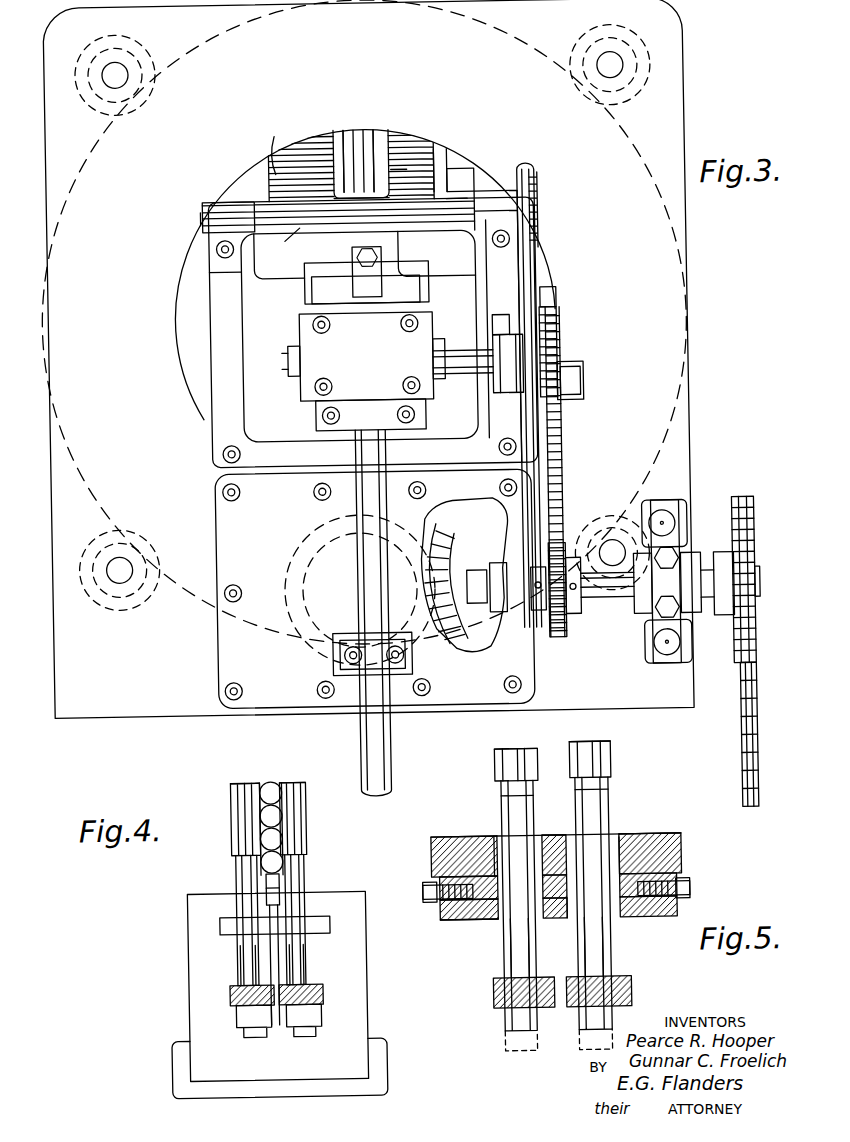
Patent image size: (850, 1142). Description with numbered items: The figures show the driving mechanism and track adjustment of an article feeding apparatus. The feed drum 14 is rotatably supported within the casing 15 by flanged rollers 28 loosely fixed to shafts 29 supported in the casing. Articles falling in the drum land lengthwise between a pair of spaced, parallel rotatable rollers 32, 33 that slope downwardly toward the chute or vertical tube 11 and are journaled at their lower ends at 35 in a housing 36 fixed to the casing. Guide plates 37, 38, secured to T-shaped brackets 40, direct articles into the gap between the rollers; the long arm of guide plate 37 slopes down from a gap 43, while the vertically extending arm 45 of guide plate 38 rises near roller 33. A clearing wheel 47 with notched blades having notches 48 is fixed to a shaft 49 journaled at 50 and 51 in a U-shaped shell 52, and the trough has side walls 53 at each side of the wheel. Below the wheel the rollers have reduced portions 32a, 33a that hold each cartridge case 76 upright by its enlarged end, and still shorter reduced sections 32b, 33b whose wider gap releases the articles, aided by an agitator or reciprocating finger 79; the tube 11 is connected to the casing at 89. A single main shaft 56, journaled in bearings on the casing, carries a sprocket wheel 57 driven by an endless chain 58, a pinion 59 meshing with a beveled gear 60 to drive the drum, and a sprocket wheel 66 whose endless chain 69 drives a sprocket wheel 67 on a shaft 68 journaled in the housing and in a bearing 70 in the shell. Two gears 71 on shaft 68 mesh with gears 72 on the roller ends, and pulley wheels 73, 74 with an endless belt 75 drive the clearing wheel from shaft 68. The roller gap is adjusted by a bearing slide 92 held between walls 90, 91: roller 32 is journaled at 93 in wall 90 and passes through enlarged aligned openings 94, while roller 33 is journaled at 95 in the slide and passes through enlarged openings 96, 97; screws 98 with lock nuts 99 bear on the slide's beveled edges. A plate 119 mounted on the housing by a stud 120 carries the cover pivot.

In FIG. 3, the chute or vertical tube 11 is at (370, 567).
In FIG. 3, the feed drum 14 is at (90, 480).
In FIG. 3, the casing 15 is at (675, 473).
In FIG. 3, the rollers 28 is at (136, 48).
In FIG. 3, the shafts 29 is at (121, 71).
In FIG. 3, the roller 32 is at (352, 130).
In FIG. 4, the roller 32 is at (243, 780).
In FIG. 5, the roller 32 is at (517, 740).
In FIG. 4, the reduced portion of roller 32a is at (242, 840).
In FIG. 5, the reduced portion of roller 32a is at (500, 757).
In FIG. 4, the reduced section of roller 32b is at (240, 870).
In FIG. 5, the reduced section of roller 32b is at (503, 787).
In FIG. 3, the roller 33 is at (385, 132).
In FIG. 4, the roller 33 is at (307, 780).
In FIG. 5, the roller 33 is at (595, 740).
In FIG. 4, the reduced portion of roller 33a is at (310, 825).
In FIG. 5, the reduced portion of roller 33a is at (613, 748).
In FIG. 4, the reduced section of roller 33b is at (313, 863).
In FIG. 5, the reduced section of roller 33b is at (607, 787).
In FIG. 4, the journal 35 is at (217, 927).
In FIG. 3, the housing 36 is at (372, 453).
In FIG. 4, the housing 36 is at (377, 1023).
In FIG. 3, the guide plate 37 is at (302, 165).
In FIG. 3, the guide plate 38 is at (377, 195).
In FIG. 3, the brackets 40 is at (449, 200).
In FIG. 3, the gap 43 is at (268, 144).
In FIG. 3, the vertically extending arm 45 is at (436, 170).
In FIG. 3, the clearing wheel 47 is at (394, 170).
In FIG. 3, the notches 48 is at (365, 143).
In FIG. 3, the shaft 49 is at (463, 207).
In FIG. 3, the journal 50 is at (234, 200).
In FIG. 3, the journal 51 is at (497, 203).
In FIG. 3, the U-shaped shell 52 is at (242, 277).
In FIG. 3, the side walls 53 is at (283, 257).
In FIG. 3, the main shaft 56 is at (603, 590).
In FIG. 3, the sprocket wheel 57 is at (750, 537).
In FIG. 3, the endless chain 58 is at (635, 613).
In FIG. 3, the pinion 59 is at (457, 577).
In FIG. 3, the beveled gear 60 is at (383, 572).
In FIG. 3, the sprocket wheel 66 is at (567, 547).
In FIG. 3, the sprocket wheel 67 is at (558, 330).
In FIG. 3, the shaft 68 is at (473, 365).
In FIG. 3, the endless chain 69 is at (292, 377).
In FIG. 3, the bearing 70 is at (503, 317).
In FIG. 4, the gears 71 is at (248, 952).
In FIG. 5, the gears 71 is at (512, 930).
In FIG. 4, the gears 72 is at (232, 995).
In FIG. 5, the gears 72 is at (490, 990).
In FIG. 3, the pulley wheel 73 is at (557, 300).
In FIG. 3, the pulley wheel 74 is at (541, 180).
In FIG. 3, the endless belt 75 is at (532, 275).
In FIG. 4, the cartridge case 76 is at (272, 792).
In FIG. 4, the agitator or reciprocating finger 79 is at (277, 887).
In FIG. 3, the connection 89 is at (335, 648).
In FIG. 5, the wall 90 is at (682, 842).
In FIG. 5, the wall 91 is at (680, 905).
In FIG. 5, the bearing slide 92 is at (652, 835).
In FIG. 5, the journal 93 is at (487, 827).
In FIG. 5, the enlarged aligned openings 94 is at (463, 918).
In FIG. 5, the journal 95 is at (620, 833).
In FIG. 5, the enlarged opening 96 is at (567, 835).
In FIG. 5, the enlarged opening 97 is at (573, 918).
In FIG. 5, the screws 98 is at (683, 867).
In FIG. 5, the lock nuts 99 is at (437, 882).
In FIG. 3, the plate 119 is at (371, 282).
In FIG. 3, the stud 120 is at (362, 268).